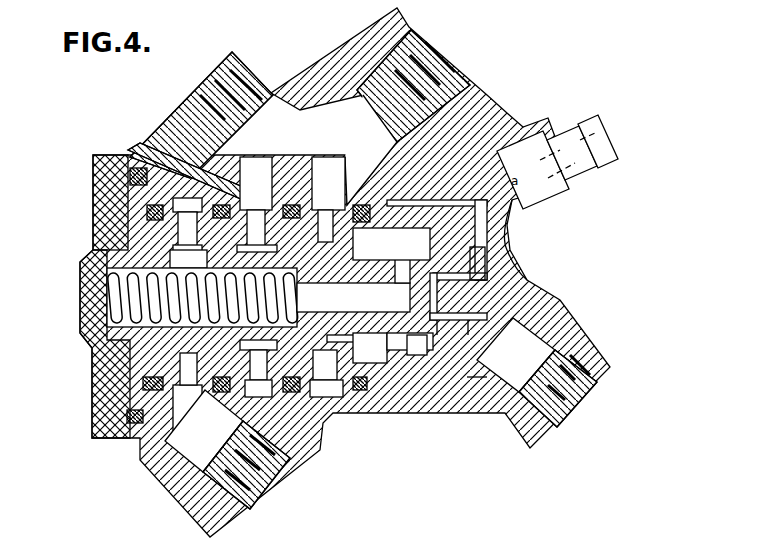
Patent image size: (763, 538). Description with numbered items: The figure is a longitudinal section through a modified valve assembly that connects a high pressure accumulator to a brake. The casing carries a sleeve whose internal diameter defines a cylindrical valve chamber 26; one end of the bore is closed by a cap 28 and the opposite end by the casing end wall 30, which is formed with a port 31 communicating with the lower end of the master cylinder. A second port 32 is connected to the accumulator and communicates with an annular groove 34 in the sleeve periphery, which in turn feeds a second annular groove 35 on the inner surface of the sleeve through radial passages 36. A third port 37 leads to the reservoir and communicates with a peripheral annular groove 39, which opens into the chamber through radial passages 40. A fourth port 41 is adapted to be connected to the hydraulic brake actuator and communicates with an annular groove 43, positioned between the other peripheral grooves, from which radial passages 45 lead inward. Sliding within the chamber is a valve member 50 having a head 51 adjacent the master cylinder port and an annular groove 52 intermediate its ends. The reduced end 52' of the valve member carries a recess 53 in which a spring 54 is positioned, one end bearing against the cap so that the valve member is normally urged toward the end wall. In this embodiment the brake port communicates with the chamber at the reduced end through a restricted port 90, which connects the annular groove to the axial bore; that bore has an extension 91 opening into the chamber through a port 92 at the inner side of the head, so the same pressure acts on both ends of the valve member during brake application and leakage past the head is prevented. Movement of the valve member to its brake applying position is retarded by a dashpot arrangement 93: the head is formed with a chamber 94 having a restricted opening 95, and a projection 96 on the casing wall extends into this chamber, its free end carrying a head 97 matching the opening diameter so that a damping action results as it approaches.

The valve chamber 26 is at (140, 348).
The cap 28 is at (93, 224).
The end wall 30 is at (467, 377).
The port 31 is at (573, 397).
The second port 32 is at (255, 492).
The annular groove 34 is at (143, 140).
The second annular groove 35 is at (170, 259).
The radial passages 36 is at (187, 225).
The third port 37 is at (421, 68).
The annular groove 39 is at (333, 217).
The radial passages 40 is at (350, 205).
The fourth port 41 is at (202, 103).
The annular groove 43 is at (267, 205).
The radial passages 45 is at (257, 231).
The valve member 50 is at (405, 345).
The head 51 is at (470, 350).
The annular groove 52 is at (340, 411).
The reduced end 52' is at (134, 418).
The recess 53 is at (305, 445).
The spring 54 is at (108, 287).
The restricted port 90 is at (353, 297).
The extension 91 is at (378, 300).
The port 92 is at (403, 272).
The dashpot arrangement 93 is at (515, 308).
The chamber 94 is at (468, 335).
The restricted opening 95 is at (492, 272).
The projection 96 is at (500, 290).
The head 97 is at (437, 335).